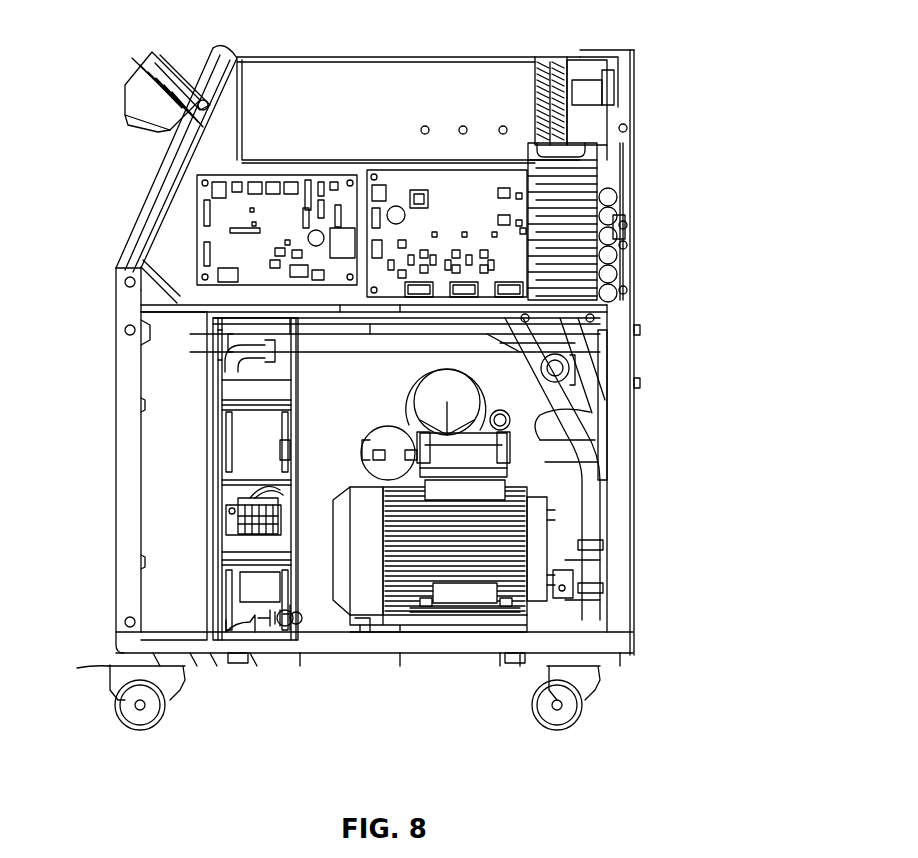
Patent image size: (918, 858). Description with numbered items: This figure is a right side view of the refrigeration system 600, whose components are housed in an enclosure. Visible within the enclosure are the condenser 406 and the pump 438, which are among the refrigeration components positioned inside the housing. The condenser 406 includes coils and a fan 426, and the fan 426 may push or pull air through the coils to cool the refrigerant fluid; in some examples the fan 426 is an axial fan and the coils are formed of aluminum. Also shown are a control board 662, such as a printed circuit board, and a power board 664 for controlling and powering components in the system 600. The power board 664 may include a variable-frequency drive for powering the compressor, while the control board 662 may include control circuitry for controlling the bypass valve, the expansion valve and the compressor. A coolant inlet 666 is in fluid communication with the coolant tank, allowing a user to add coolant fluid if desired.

The refrigeration system 600 is at (745, 70).
The condenser 406 is at (165, 502).
The fan 426 is at (240, 463).
The pump 438 is at (415, 568).
The control board 662 is at (205, 235).
The power board 664 is at (455, 185).
The coolant inlet 666 is at (170, 83).